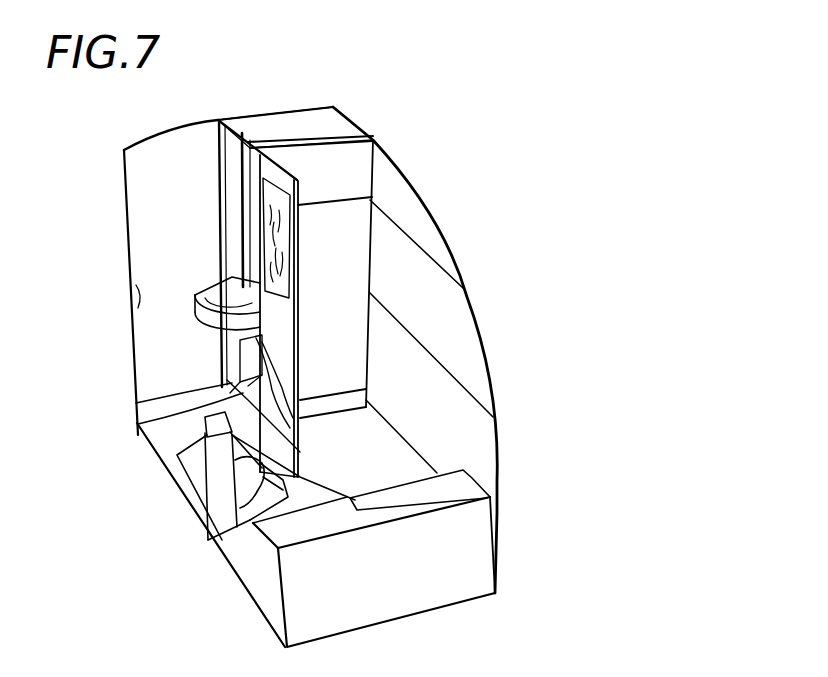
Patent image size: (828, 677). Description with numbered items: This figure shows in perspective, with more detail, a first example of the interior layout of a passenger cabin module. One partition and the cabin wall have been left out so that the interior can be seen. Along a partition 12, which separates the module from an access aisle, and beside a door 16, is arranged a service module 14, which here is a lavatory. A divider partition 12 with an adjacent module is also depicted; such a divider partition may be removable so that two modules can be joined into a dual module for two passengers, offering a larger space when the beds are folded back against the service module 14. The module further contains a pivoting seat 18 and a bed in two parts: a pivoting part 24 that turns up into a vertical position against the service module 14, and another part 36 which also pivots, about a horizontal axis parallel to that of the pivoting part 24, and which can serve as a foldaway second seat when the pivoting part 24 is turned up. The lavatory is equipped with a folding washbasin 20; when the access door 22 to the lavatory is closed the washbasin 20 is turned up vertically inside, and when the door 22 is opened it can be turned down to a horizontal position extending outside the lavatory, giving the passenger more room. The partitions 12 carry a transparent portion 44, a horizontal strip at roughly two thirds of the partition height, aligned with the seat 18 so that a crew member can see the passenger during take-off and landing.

The partition 12 is at (258, 113).
The service module 14 is at (307, 124).
The door 16 is at (147, 203).
The pivoting seat 18 is at (228, 527).
The folding washbasin 20 is at (197, 296).
The access door 22 is at (292, 335).
The pivoting part 24 is at (355, 258).
The other part of the bed 36 is at (449, 477).
The transparent portion 44 is at (468, 330).